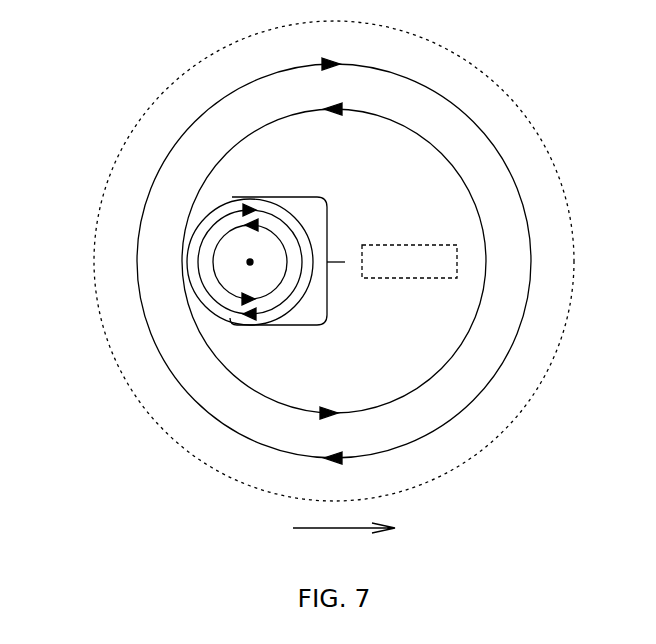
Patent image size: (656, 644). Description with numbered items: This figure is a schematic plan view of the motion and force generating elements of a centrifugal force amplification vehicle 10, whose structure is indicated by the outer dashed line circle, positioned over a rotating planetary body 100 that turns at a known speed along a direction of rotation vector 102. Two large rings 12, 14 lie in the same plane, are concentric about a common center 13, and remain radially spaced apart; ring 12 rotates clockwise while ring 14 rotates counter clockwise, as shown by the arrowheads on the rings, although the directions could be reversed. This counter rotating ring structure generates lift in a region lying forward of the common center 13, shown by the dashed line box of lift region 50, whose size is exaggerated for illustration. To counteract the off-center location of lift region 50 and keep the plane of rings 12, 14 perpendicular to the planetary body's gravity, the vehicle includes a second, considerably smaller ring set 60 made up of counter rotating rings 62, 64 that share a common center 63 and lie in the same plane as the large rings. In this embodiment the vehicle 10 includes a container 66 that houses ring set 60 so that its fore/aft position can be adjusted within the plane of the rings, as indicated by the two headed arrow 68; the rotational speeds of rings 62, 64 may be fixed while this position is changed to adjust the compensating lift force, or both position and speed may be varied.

The vehicle 10 is at (503, 437).
The ring 12 is at (212, 102).
The ring 14 is at (262, 130).
The common center 13 is at (337, 257).
The lift region 50 is at (455, 268).
The ring set 60 is at (228, 335).
The ring 62 is at (207, 308).
The common center 63 is at (250, 262).
The ring 64 is at (192, 228).
The container 66 is at (200, 255).
The two headed arrow 68 is at (327, 332).
The rotating planetary body 100 is at (106, 489).
The direction of rotation vector 102 is at (326, 529).